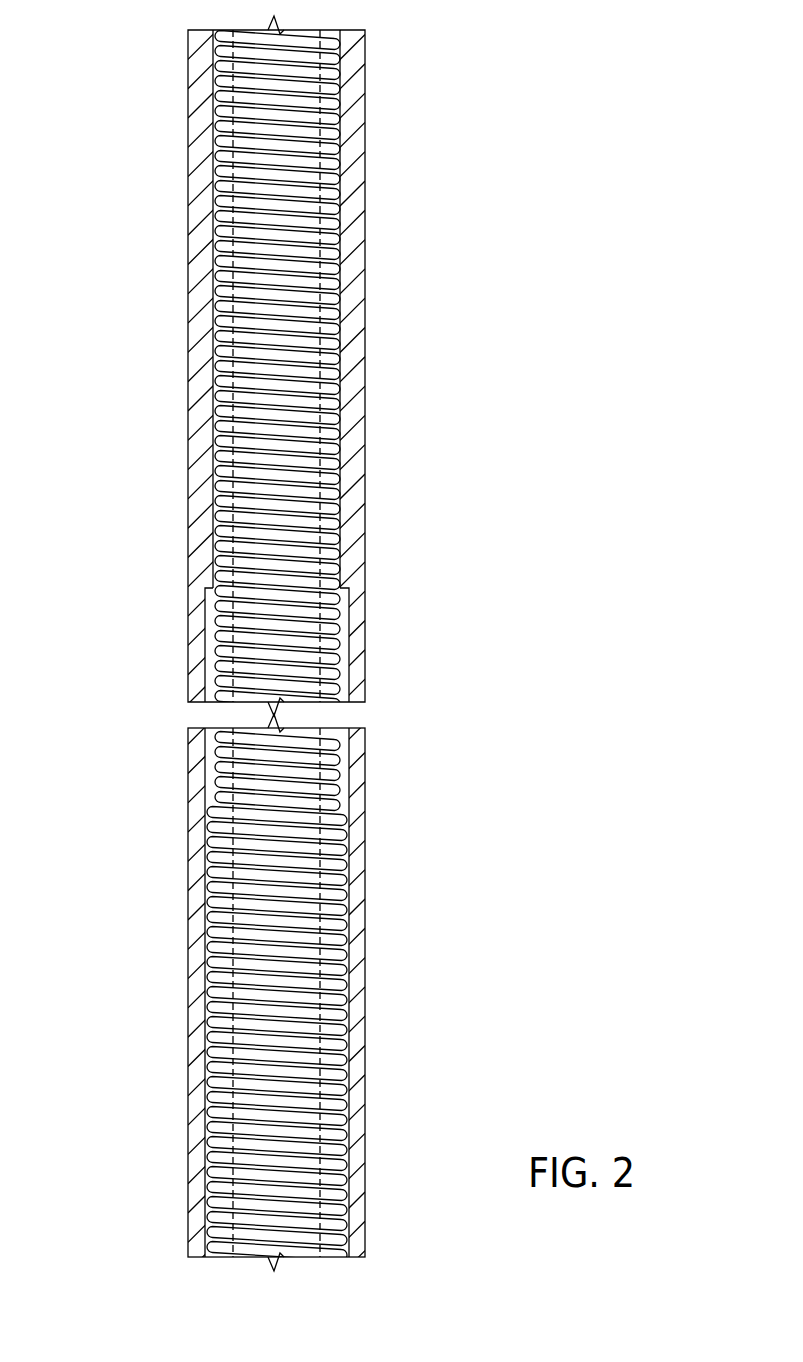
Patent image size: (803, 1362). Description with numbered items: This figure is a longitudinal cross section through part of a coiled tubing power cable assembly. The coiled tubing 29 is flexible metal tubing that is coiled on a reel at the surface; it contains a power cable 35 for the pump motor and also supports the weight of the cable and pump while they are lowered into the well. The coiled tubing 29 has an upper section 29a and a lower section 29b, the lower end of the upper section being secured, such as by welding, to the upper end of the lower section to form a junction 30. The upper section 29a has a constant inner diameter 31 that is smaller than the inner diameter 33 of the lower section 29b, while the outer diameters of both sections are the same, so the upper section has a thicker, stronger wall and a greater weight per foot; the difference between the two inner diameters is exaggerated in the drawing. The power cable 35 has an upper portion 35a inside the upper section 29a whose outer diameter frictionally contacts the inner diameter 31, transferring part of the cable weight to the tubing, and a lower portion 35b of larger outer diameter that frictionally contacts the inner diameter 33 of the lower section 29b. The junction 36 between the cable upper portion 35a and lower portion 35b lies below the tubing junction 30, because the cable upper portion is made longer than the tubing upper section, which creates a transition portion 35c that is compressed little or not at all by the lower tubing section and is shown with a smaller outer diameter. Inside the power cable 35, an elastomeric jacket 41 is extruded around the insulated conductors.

The coiled tubing 29 is at (321, 681).
The upper section 29a is at (360, 212).
The lower section 29b is at (357, 878).
The junction 30 is at (343, 590).
The inner diameter 31 is at (333, 400).
The inner diameter 33 is at (350, 771).
The power cable 35 is at (267, 646).
The upper portion 35a is at (337, 310).
The lower portion 35b is at (341, 1023).
The transition portion 35c is at (253, 698).
The junction 36 is at (343, 820).
The elastomeric jacket 41 is at (335, 305).